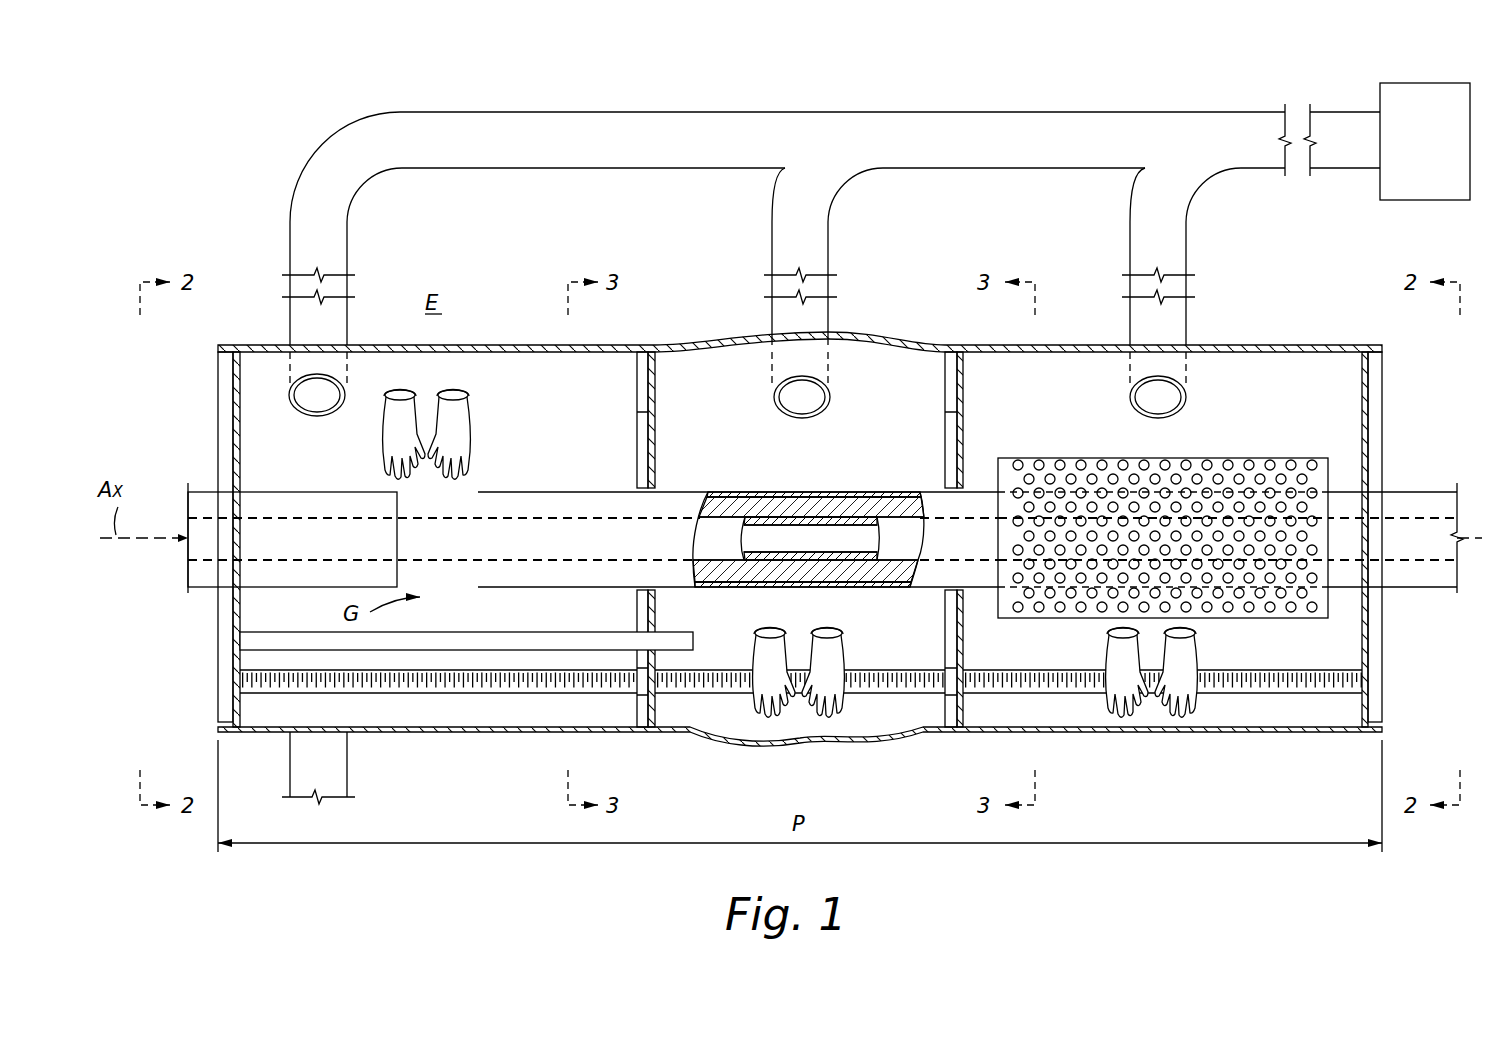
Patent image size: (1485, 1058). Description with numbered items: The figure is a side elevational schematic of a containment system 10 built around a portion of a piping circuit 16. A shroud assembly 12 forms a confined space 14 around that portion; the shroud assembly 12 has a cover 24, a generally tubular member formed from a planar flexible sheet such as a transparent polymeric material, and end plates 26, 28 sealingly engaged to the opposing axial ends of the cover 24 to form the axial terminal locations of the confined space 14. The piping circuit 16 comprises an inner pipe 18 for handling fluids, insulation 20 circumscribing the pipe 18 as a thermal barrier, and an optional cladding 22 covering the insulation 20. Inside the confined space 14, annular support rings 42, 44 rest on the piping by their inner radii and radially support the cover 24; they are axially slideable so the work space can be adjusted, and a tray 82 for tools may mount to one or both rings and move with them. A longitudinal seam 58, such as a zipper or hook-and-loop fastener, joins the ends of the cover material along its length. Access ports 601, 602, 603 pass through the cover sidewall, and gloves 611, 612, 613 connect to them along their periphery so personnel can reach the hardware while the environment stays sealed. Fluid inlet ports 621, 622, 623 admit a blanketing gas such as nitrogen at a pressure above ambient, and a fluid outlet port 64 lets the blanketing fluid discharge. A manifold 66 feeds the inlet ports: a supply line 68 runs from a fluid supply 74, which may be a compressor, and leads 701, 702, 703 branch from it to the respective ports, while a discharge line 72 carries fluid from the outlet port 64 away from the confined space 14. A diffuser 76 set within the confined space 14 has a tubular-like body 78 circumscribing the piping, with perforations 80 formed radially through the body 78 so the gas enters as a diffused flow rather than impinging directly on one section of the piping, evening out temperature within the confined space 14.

The containment system 10 is at (207, 88).
The shroud assembly 12 is at (1280, 320).
The confined space 14 is at (608, 422).
The piping circuit 16 is at (757, 468).
The inner pipe 18 is at (777, 524).
The insulation 20 is at (828, 507).
The cladding 22 is at (880, 494).
The cover 24 is at (1258, 733).
The end plate 26 is at (218, 398).
The end plate 28 is at (1384, 400).
The annular support ring 42 is at (657, 392).
The annular support ring 44 is at (945, 392).
The longitudinal seam 58 is at (440, 693).
The access port 601 is at (476, 420).
The access port 602 is at (812, 655).
The access port 603 is at (1153, 676).
The glove 611 is at (490, 452).
The glove 612 is at (750, 662).
The glove 613 is at (1100, 706).
The fluid inlet port 621 is at (312, 402).
The fluid inlet port 622 is at (805, 398).
The fluid inlet port 623 is at (1162, 398).
The fluid outlet port 64 is at (322, 727).
The manifold 66 is at (831, 202).
The supply line 68 is at (1003, 112).
The lead 701 is at (353, 200).
The lead 702 is at (835, 200).
The lead 703 is at (1193, 200).
The discharge line 72 is at (348, 762).
The fluid supply 74 is at (1427, 203).
The diffuser 76 is at (1151, 508).
The body 78 is at (1163, 509).
The perforations 80 is at (1278, 486).
The tray 82 is at (518, 632).